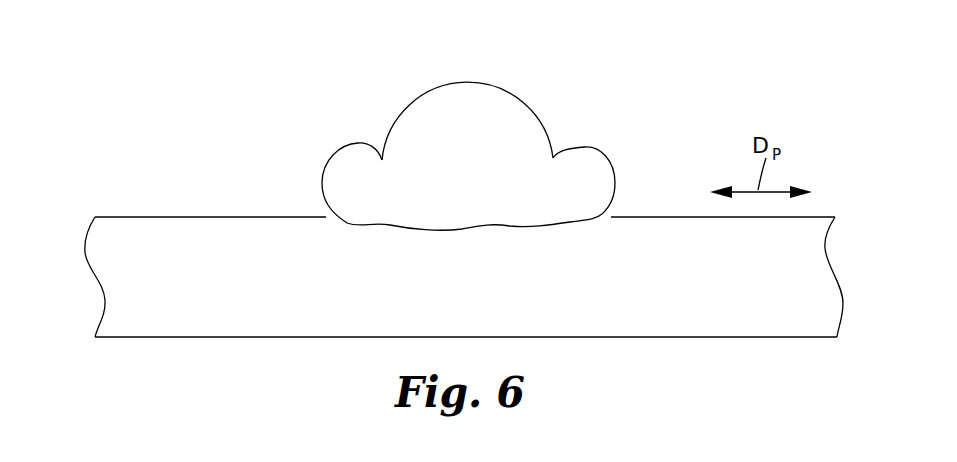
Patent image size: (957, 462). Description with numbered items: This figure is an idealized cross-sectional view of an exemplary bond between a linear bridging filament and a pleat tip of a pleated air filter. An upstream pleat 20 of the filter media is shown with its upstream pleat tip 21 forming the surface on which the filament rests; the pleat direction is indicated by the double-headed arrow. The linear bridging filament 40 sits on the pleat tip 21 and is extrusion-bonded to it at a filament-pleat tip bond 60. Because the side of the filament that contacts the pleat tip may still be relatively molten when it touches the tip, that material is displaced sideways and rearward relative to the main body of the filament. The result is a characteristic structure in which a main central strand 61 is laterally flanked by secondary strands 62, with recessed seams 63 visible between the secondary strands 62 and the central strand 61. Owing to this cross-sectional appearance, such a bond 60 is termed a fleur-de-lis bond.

The upstream pleat 20 is at (464, 279).
The upstream pleat tip 21 is at (148, 217).
The linear bridging filament 40 is at (468, 180).
The filament-pleat tip bond 60 is at (461, 240).
The main central strand 61 is at (480, 84).
The secondary strand 62 is at (328, 165).
The recessed seam 63 is at (382, 158).